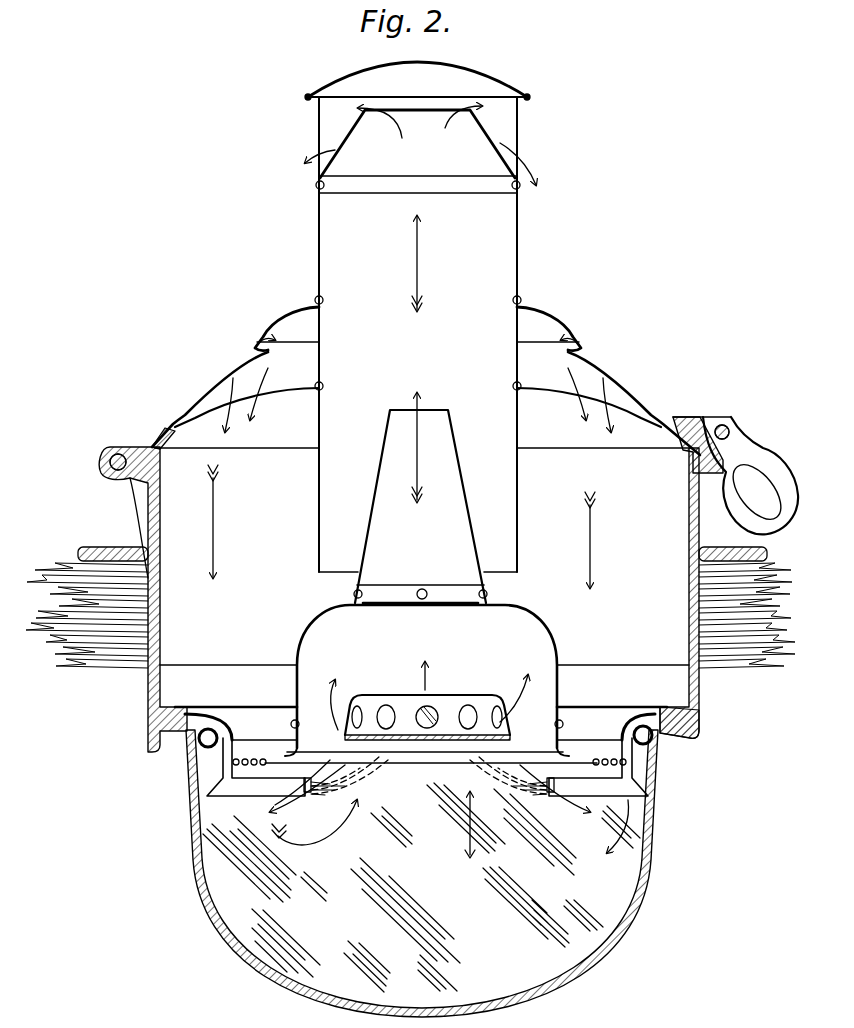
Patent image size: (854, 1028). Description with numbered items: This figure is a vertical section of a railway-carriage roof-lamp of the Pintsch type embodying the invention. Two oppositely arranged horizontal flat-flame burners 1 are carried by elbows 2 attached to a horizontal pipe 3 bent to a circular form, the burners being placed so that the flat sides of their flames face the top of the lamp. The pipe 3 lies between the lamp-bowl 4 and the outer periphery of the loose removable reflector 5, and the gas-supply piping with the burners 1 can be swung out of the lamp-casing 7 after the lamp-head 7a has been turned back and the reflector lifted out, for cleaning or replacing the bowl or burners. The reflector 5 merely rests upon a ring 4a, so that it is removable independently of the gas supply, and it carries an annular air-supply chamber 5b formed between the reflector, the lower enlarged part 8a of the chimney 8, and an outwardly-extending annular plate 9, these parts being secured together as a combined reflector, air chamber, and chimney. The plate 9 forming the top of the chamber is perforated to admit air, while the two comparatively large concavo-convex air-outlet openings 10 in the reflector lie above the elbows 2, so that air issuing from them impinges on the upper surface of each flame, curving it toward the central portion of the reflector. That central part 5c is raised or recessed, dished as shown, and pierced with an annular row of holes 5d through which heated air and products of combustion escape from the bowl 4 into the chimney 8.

The horizontal flat-flame burner 1 is at (306, 793).
The elbow 2 is at (250, 788).
The horizontal pipe 3 is at (200, 745).
The lamp-bowl 4 is at (422, 873).
The ring 4a is at (700, 722).
The reflector 5 is at (427, 754).
The annular air-supply chamber 5b is at (252, 752).
The raised or recessed central part 5c is at (440, 711).
The holes 5d is at (424, 706).
The lamp-casing 7 is at (412, 584).
The lamp-head 7a is at (538, 322).
The chimney 8 is at (420, 506).
The lower enlarged part of the chimney 8a is at (430, 708).
The outwardly-extending annular plate 9 is at (582, 730).
The air-outlet opening 10 is at (266, 765).